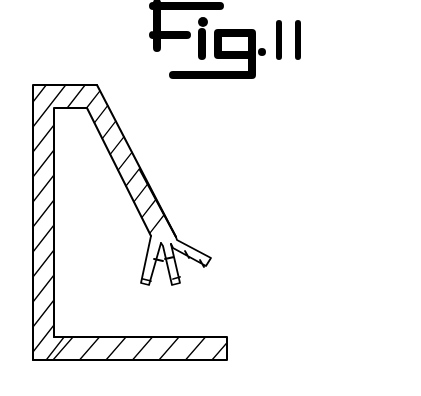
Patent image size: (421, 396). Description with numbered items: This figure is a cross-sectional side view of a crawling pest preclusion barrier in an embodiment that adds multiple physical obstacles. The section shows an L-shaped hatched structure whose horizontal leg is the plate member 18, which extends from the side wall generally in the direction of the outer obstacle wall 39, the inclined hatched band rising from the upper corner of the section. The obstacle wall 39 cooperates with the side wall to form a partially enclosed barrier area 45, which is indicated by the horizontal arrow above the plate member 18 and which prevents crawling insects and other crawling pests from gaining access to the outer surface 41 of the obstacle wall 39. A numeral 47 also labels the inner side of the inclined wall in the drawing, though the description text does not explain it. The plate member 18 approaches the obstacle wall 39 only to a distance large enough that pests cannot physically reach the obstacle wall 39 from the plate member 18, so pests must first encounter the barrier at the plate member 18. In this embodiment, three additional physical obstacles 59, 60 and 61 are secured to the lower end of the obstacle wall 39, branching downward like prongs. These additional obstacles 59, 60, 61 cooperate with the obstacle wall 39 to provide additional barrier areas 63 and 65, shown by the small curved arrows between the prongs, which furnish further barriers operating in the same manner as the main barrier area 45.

The plate member 18 is at (138, 353).
The outer obstacle wall 39 is at (128, 143).
The outer surface 41 is at (158, 202).
The barrier area 45 is at (118, 328).
The inner surface 47 is at (117, 168).
The additional physical obstacle 59 is at (146, 262).
The additional physical obstacle 60 is at (180, 286).
The additional physical obstacle 61 is at (199, 249).
The additional barrier area 63 is at (162, 286).
The additional barrier area 65 is at (192, 274).